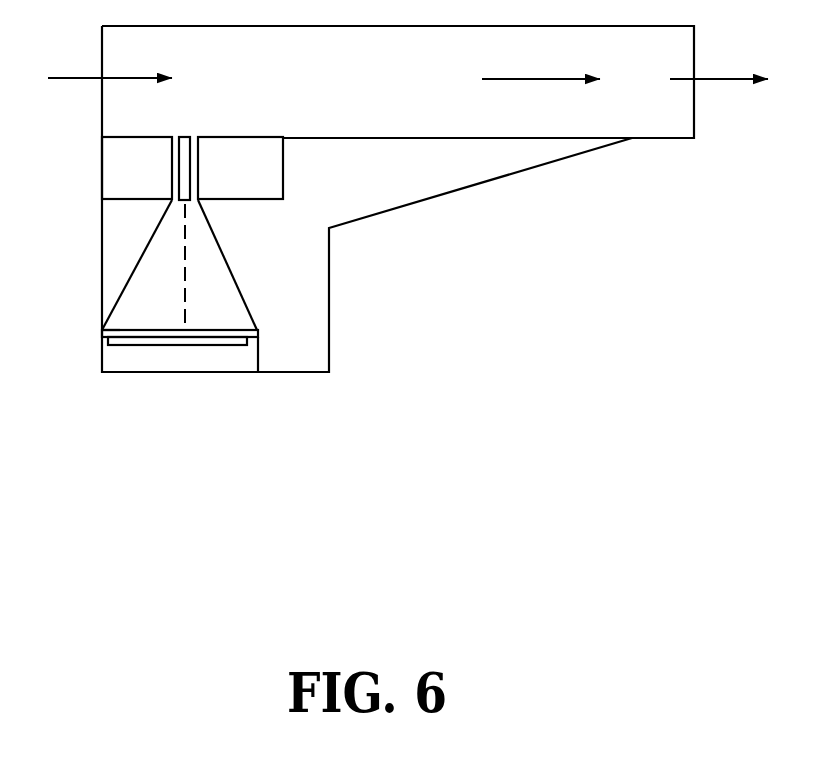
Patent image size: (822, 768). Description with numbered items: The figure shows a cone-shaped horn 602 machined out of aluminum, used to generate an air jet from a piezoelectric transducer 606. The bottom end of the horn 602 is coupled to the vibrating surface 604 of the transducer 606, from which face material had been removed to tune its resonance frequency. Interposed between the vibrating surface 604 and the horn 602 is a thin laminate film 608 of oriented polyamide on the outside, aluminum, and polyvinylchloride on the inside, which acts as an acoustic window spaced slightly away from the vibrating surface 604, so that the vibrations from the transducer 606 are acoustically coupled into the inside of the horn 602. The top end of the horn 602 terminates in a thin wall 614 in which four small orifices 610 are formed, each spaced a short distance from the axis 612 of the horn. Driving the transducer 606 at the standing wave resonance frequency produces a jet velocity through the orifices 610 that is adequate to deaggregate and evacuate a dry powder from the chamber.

The horn 602 is at (158, 331).
The vibrating surface 604 is at (210, 325).
The piezoelectric transducer 606 is at (208, 358).
The thin laminate film 608 is at (100, 333).
The orifices 610 is at (202, 182).
The axis of the horn 612 is at (178, 268).
The wall 614 is at (103, 178).